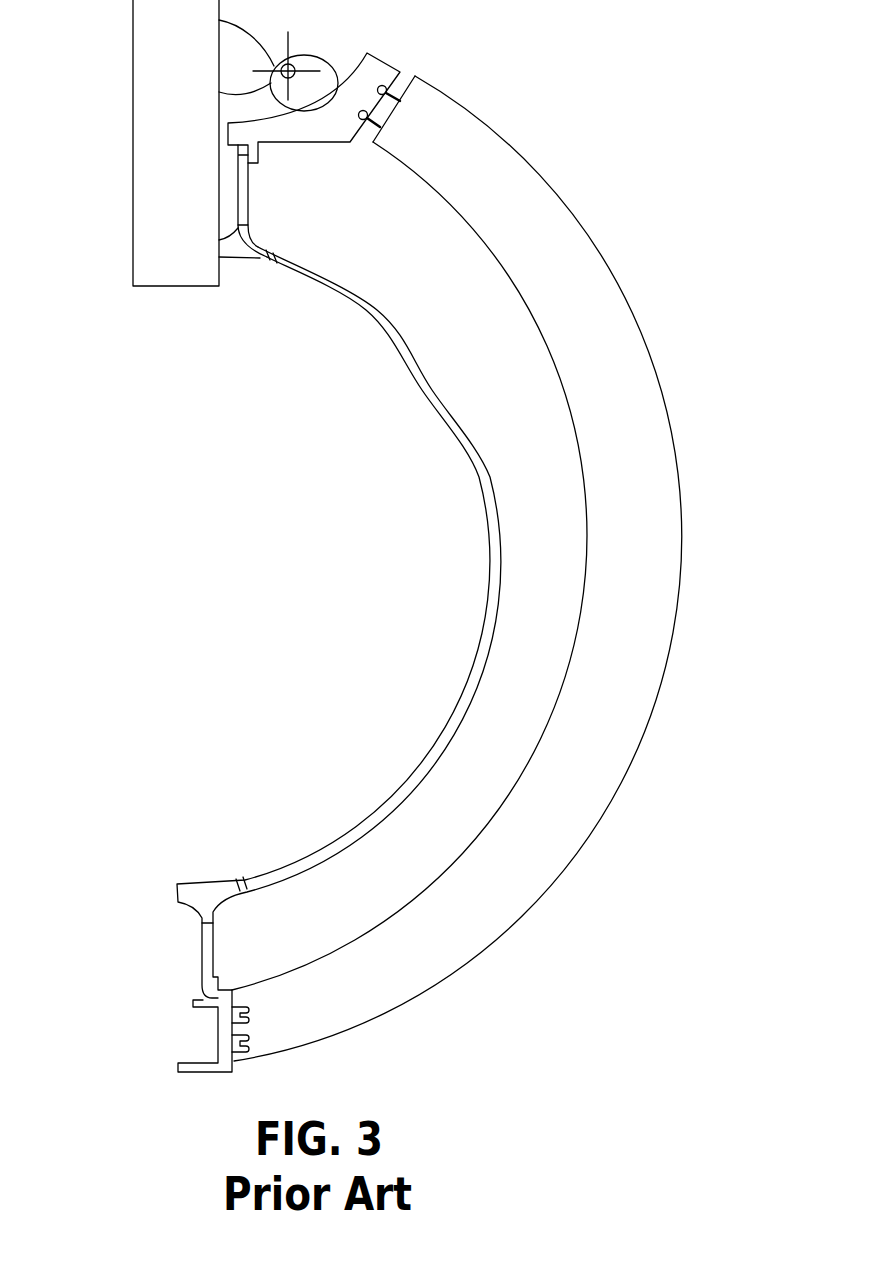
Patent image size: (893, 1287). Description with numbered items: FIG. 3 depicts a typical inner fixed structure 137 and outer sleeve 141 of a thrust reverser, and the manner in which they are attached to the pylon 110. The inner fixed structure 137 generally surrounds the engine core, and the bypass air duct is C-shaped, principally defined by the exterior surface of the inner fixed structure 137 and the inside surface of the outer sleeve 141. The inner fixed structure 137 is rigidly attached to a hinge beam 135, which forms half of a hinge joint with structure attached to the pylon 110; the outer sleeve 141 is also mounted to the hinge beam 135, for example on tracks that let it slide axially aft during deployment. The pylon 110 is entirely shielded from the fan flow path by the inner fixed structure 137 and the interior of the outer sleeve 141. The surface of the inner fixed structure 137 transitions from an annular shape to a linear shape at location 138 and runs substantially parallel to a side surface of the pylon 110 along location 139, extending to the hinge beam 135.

The pylon 110 is at (150, 287).
The hinge beam 135 is at (250, 137).
The inner fixed structure 137 is at (487, 527).
The location 138 is at (258, 242).
The location 139 is at (243, 192).
The outer sleeve 141 is at (598, 498).